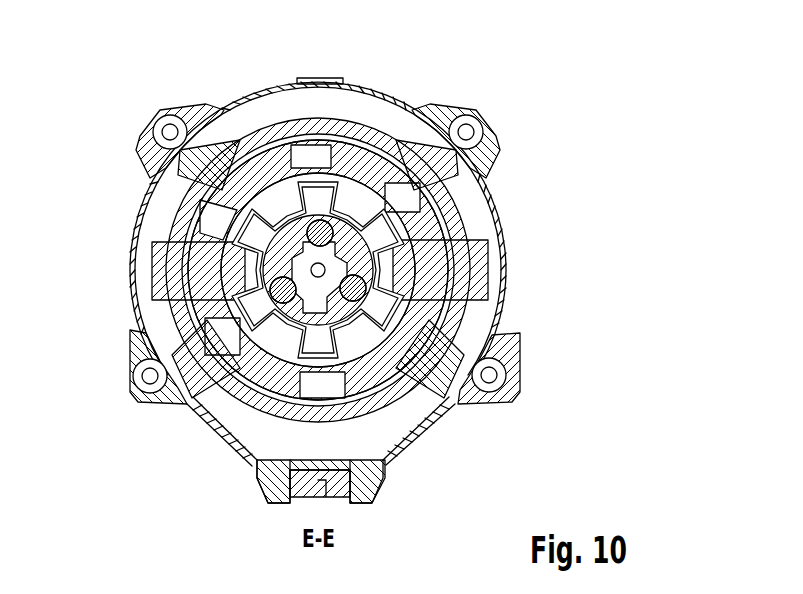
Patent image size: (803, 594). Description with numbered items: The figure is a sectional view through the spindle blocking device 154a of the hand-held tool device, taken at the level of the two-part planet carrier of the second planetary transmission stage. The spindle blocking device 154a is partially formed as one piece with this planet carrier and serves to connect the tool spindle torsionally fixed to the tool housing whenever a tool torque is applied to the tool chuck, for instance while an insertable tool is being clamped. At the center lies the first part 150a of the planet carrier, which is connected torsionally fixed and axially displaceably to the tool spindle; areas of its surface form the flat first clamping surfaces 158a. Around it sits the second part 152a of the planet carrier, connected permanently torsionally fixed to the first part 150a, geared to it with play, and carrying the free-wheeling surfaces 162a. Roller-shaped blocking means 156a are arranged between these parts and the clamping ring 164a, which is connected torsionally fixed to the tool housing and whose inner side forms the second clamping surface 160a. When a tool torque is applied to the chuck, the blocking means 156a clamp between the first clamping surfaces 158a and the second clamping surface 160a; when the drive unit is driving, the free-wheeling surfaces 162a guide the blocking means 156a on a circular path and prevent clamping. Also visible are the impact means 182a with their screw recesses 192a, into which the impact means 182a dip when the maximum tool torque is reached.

The first part of planet carrier 150a is at (463, 387).
The second part of planet carrier 152a is at (306, 345).
The spindle blocking device 154a is at (383, 375).
The blocking means 156a is at (263, 307).
The first clamping surfaces 158a is at (330, 238).
The second clamping surface 160a is at (348, 236).
The free-wheeling surfaces 162a is at (312, 236).
The clamping ring 164a is at (322, 318).
The impact means 182a is at (477, 275).
The screw recesses 192a is at (418, 207).